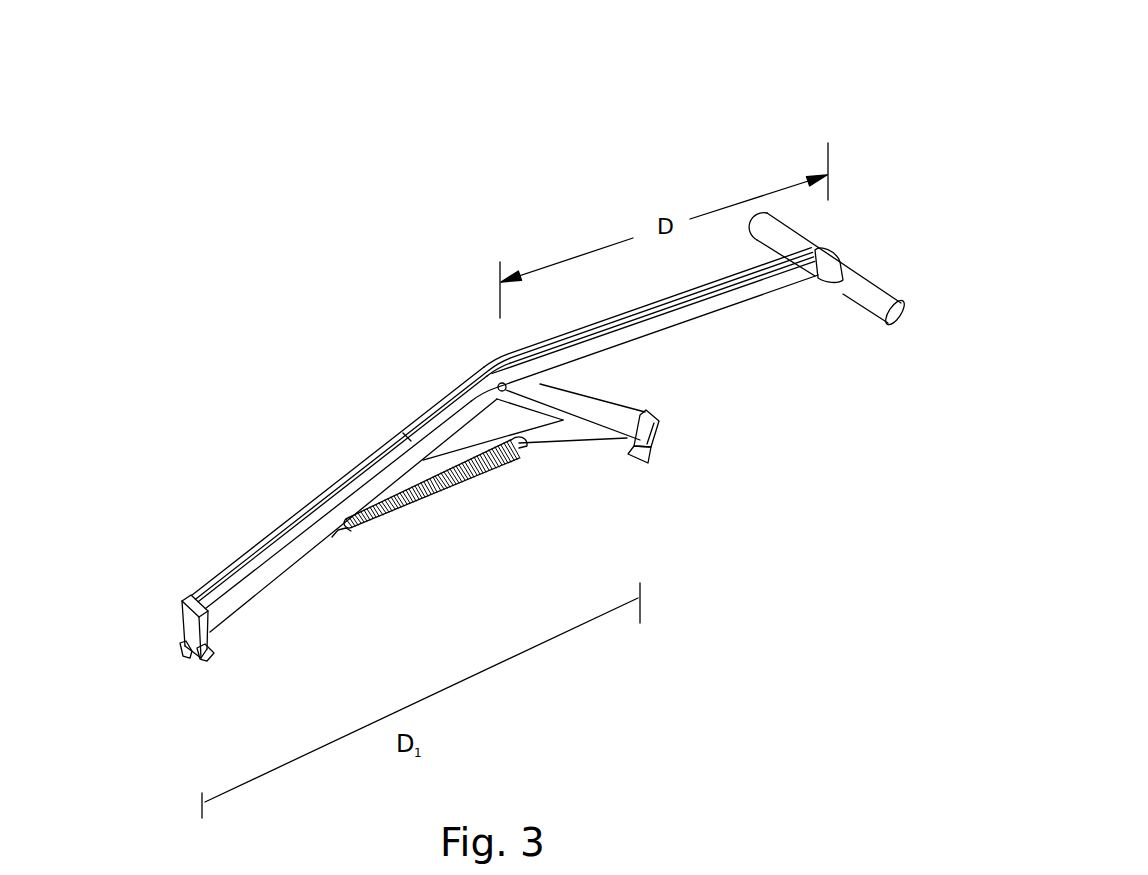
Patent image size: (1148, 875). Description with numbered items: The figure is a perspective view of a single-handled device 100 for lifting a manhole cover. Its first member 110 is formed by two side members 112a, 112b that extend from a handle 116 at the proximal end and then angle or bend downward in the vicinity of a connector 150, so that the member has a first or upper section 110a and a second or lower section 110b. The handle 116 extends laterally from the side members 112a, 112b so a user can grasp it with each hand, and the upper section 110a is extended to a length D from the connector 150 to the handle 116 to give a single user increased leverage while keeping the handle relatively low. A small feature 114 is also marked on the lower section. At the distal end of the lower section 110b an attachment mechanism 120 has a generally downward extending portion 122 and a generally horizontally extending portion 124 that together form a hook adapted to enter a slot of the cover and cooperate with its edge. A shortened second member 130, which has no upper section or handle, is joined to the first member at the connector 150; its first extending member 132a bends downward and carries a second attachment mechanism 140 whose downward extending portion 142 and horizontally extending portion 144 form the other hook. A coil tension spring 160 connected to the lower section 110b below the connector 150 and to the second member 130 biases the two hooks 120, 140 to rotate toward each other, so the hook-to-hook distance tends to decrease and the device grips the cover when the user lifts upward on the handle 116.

The device 100 is at (714, 150).
The first member 110 is at (704, 348).
The first or upper section 110a is at (768, 298).
The second or lower section 110b is at (303, 570).
The side member 112a is at (261, 544).
The side member 112b is at (312, 524).
The slot 114 is at (387, 443).
The handle 116 is at (886, 327).
The attachment mechanism 120 is at (173, 585).
The downward extending portion 122 is at (188, 660).
The horizontally extending portion 124 is at (207, 656).
The second member 130 is at (600, 386).
The first extending member 132a is at (575, 413).
The attachment mechanism 140 is at (665, 424).
The downward extending portion 142 is at (650, 467).
The horizontally extending portion 144 is at (648, 448).
The connector 150 is at (497, 387).
The coil tension spring 160 is at (458, 493).